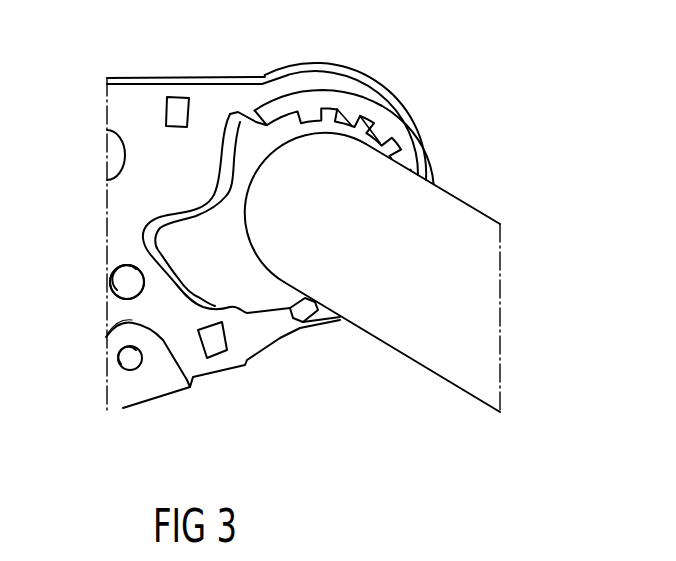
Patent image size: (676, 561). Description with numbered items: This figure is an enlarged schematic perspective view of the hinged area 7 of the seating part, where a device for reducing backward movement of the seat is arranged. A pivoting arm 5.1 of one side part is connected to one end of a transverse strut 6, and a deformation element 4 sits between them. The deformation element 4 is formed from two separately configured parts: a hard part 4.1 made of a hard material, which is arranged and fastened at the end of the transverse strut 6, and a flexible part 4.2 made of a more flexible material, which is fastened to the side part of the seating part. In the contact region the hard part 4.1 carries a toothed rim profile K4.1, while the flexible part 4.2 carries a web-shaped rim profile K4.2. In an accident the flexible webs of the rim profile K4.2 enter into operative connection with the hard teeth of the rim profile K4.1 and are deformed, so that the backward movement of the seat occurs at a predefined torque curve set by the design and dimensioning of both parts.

The pivoting arm 5.1 is at (212, 98).
The deformation element 4 is at (296, 84).
The hard part 4.1 is at (113, 286).
The flexible part 4.2 is at (337, 100).
The toothed rim profile K4.1 is at (358, 115).
The web-shaped rim profile K4.2 is at (387, 130).
The transverse strut 6 is at (487, 293).
The hinged area 7 is at (458, 106).